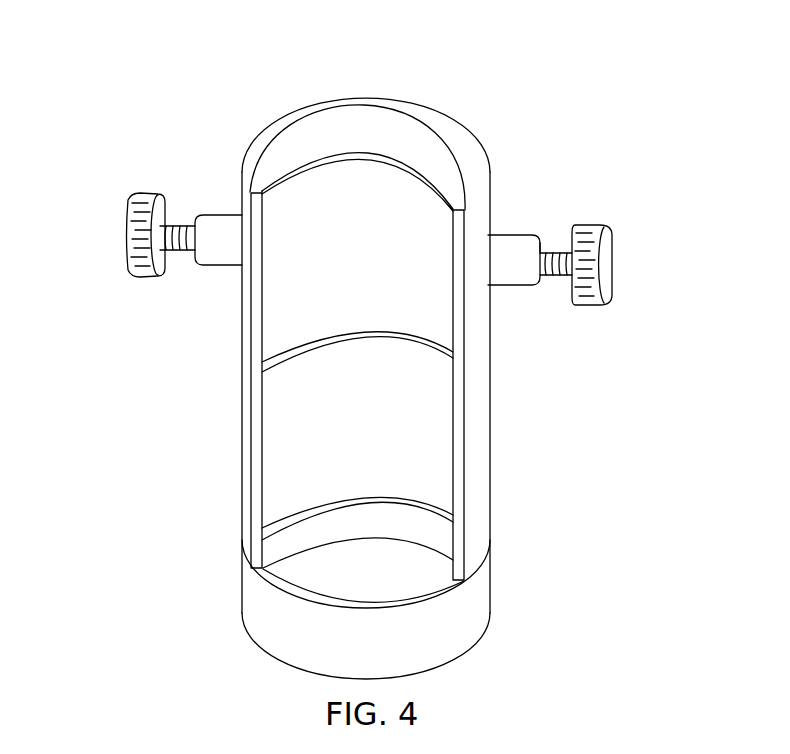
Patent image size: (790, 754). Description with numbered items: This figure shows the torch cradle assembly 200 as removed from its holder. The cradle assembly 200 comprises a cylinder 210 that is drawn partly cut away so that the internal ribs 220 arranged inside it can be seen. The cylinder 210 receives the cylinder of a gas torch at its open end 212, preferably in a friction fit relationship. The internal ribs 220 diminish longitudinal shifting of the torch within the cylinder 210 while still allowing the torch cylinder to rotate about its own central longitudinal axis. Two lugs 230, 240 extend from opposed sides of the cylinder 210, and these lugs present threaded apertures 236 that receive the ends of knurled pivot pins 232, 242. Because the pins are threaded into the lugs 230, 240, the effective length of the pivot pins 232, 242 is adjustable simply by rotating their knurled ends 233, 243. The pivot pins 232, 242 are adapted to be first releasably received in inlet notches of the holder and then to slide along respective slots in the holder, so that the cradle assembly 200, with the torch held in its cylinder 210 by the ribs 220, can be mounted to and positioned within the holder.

The cradle assembly 200 is at (447, 90).
The cylinder 210 is at (490, 602).
The open end 212 is at (372, 98).
The internal ribs 220 is at (293, 170).
The lug 230 is at (196, 264).
The knurled pivot pin 232 is at (187, 225).
The knurled end 233 is at (125, 207).
The threaded aperture 236 is at (545, 242).
The lug 240 is at (515, 283).
The knurled pivot pin 242 is at (552, 252).
The knurled end 243 is at (612, 257).